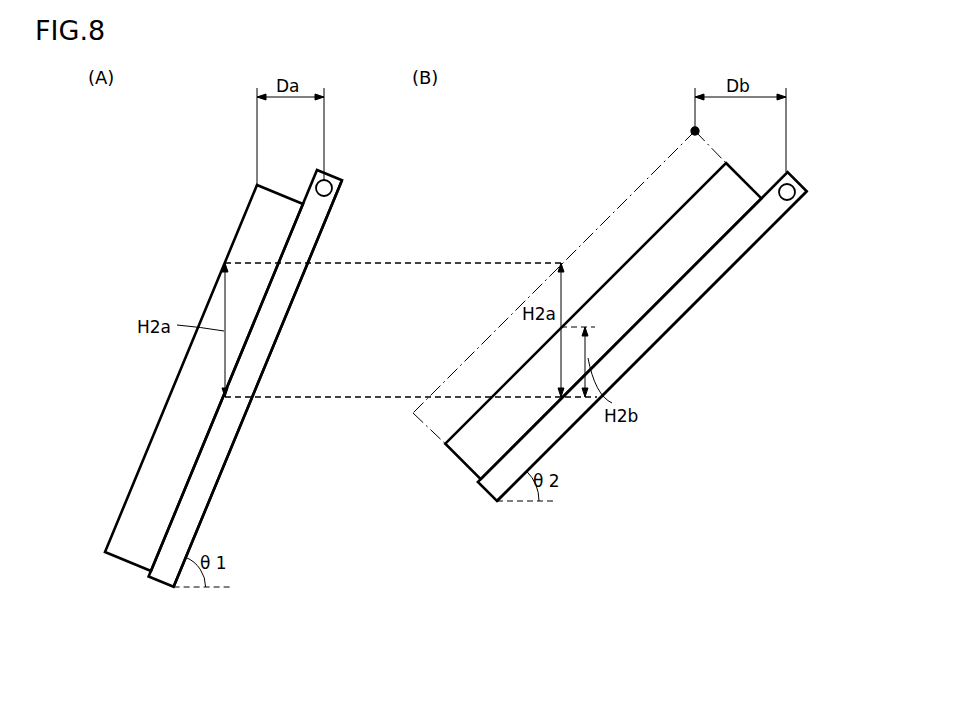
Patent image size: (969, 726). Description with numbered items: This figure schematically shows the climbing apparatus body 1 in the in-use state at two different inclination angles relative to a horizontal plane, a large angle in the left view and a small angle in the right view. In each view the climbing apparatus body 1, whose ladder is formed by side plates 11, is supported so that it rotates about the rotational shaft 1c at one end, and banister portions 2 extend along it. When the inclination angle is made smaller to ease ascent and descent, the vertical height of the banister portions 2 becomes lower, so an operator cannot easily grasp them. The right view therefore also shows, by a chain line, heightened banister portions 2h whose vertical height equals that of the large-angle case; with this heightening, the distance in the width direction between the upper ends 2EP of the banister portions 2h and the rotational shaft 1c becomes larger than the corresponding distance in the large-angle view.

The climbing apparatus body 1 is at (187, 514).
The rotational shaft 1c is at (335, 188).
The banister portions 2 is at (136, 478).
The upper ends of banister portions 2EP is at (691, 131).
The banister portions 2h is at (502, 320).
The side plates 11 is at (219, 441).